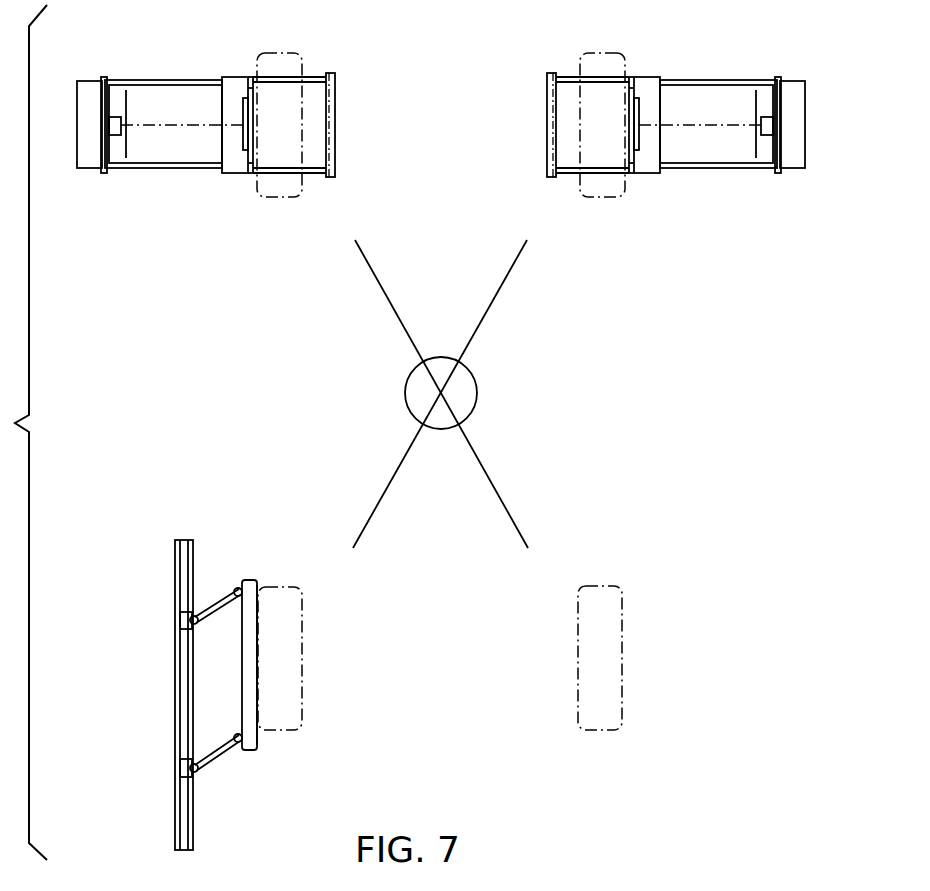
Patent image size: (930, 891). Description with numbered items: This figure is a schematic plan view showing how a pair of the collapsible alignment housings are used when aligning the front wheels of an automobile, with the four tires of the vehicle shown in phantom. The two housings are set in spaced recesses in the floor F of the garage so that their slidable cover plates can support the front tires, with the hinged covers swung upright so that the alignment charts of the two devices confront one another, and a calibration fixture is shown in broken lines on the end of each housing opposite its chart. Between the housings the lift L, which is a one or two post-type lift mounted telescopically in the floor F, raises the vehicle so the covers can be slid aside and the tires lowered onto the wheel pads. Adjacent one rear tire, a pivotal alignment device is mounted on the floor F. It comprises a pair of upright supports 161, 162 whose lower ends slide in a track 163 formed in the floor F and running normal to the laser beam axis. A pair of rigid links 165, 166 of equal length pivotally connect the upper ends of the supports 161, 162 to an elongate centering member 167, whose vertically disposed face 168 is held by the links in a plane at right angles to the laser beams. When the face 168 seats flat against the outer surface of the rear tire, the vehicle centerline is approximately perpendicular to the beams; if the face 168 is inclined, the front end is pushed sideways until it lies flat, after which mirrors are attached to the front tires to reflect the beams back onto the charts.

The upright support 161 is at (178, 618).
The upright support 162 is at (178, 766).
The track 163 is at (175, 564).
The rigid link 165 is at (215, 602).
The rigid link 166 is at (215, 748).
The centering member 167 is at (252, 752).
The vertically disposed face 168 is at (257, 612).
The lift L is at (392, 308).
The floor F is at (572, 372).